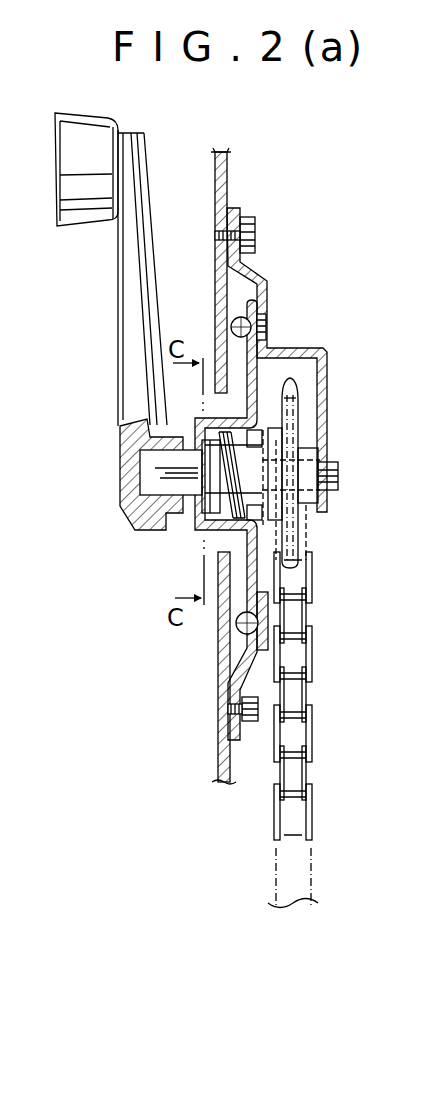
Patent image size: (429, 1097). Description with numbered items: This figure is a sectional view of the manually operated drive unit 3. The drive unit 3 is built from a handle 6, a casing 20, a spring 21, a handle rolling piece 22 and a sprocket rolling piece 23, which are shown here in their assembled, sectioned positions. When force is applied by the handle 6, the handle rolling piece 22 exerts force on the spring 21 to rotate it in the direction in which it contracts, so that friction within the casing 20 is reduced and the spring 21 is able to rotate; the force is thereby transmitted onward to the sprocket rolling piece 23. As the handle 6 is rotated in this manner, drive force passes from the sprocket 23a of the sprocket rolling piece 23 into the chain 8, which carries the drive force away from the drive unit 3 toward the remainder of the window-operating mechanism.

The manually operated drive unit 3 is at (272, 276).
The handle 6 is at (122, 287).
The chain 8 is at (312, 670).
The casing 20 is at (197, 420).
The spring 21 is at (198, 515).
The handle rolling piece 22 is at (148, 477).
The sprocket rolling piece 23 is at (255, 500).
The sprocket 23a is at (300, 401).